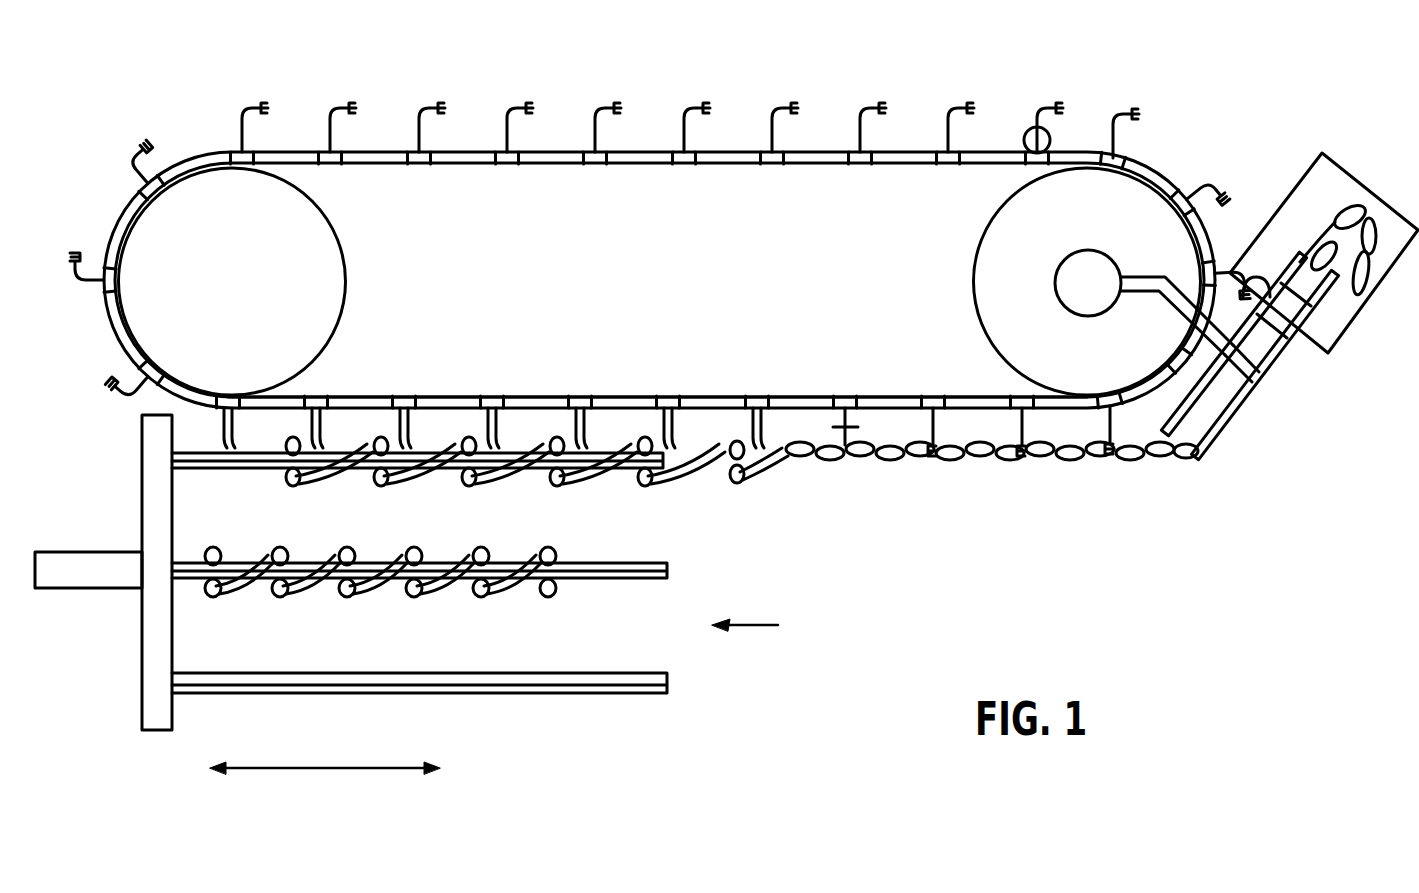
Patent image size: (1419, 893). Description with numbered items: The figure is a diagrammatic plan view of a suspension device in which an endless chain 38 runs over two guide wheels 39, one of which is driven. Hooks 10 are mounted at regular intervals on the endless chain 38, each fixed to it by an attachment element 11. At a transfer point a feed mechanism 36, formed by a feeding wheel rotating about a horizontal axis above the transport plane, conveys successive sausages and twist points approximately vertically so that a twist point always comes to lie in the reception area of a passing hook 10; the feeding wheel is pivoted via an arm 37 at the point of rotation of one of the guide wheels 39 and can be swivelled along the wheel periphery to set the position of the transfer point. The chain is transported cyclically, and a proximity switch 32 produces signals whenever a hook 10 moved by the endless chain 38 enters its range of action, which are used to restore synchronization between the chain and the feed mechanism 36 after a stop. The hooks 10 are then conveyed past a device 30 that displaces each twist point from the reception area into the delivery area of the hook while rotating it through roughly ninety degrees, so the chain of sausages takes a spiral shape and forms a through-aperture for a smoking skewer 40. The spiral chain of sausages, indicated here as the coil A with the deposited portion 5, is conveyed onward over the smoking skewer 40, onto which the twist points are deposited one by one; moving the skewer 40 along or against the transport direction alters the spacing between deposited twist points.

The hook 10 is at (744, 241).
The endless chain 38 is at (659, 221).
The guide wheels 39 is at (660, 281).
The attachment element 11 is at (657, 354).
The proximity switch 32 is at (1067, 100).
The device 30 is at (815, 387).
The arm 37 is at (1144, 303).
The feed mechanism 36 is at (1289, 306).
The smoking skewer 40 is at (515, 687).
The helical coil 5 is at (742, 479).
The coil on mandrel A is at (501, 553).